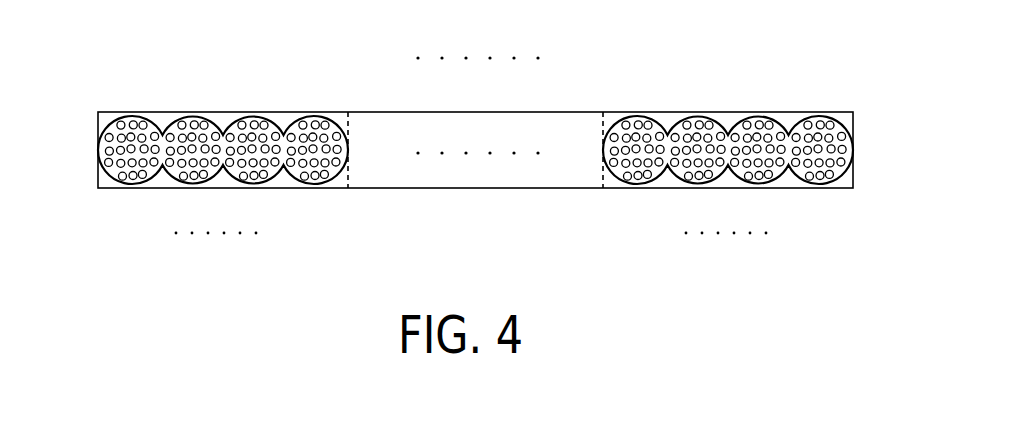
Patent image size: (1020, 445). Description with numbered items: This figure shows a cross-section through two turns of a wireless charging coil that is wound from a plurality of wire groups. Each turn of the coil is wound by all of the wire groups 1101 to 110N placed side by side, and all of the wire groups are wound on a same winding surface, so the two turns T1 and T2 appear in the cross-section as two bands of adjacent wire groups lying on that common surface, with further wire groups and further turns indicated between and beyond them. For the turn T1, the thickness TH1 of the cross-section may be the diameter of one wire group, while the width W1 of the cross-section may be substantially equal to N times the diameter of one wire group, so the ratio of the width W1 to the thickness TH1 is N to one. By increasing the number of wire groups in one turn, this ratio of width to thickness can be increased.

The wire group 1101 is at (132, 188).
The wire group 110N is at (313, 188).
The turn T1 is at (365, 102).
The turn T2 is at (870, 102).
The thickness of the cross-section of the turn TH1 is at (90, 112).
The width of the cross-section of the turn W1 is at (348, 193).